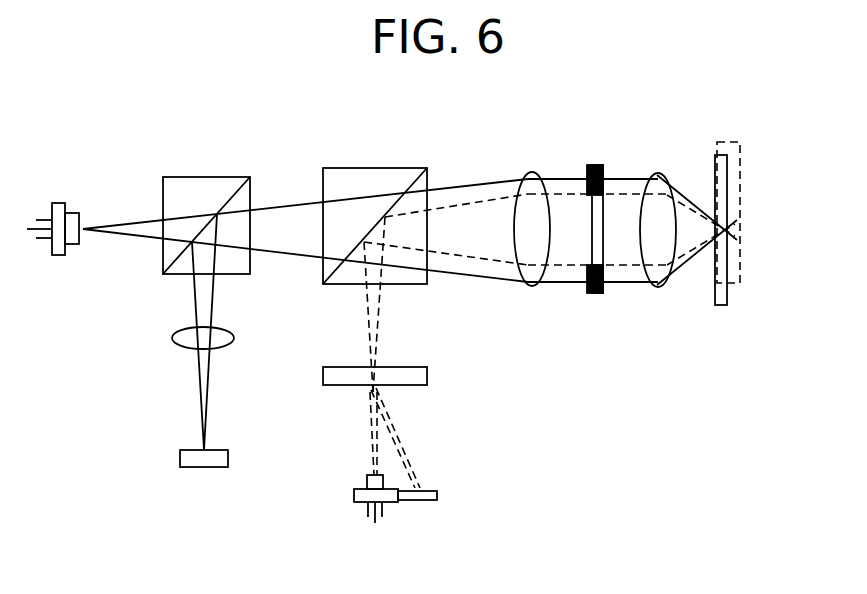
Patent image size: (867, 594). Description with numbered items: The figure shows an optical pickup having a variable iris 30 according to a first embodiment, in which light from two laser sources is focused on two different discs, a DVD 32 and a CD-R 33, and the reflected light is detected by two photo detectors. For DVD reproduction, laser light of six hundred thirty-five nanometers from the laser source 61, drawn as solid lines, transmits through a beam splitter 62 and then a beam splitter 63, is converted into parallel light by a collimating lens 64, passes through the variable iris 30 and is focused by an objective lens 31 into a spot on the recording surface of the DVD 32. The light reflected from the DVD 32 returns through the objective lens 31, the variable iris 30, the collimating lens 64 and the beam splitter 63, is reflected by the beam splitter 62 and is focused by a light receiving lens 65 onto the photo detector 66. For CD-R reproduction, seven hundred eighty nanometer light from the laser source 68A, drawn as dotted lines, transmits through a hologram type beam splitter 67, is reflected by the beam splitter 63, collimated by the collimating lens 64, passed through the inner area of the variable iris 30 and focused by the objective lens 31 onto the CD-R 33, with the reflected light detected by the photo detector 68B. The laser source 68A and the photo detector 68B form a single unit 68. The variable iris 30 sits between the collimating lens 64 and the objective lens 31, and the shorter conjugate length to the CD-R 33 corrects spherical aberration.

The variable iris 30 is at (595, 297).
The objective lens 31 is at (660, 173).
The DVD 32 is at (728, 298).
The CD-R 33 is at (740, 218).
The laser source 61 is at (57, 257).
The beam splitter 62 is at (205, 177).
The beam splitter 63 is at (378, 168).
The collimating lens 64 is at (535, 173).
The light receiving lens 65 is at (173, 338).
The photo detector 66 is at (180, 458).
The hologram type beam splitter 67 is at (427, 376).
The single unit 68 is at (389, 503).
The laser source 68A is at (367, 483).
The photo detector 68B is at (428, 507).